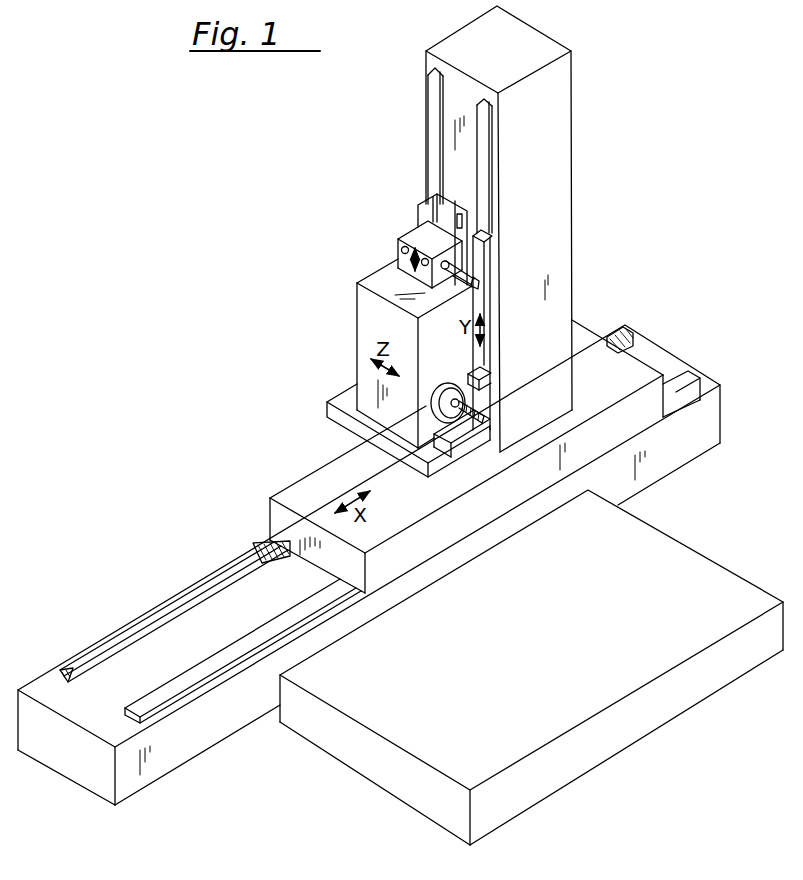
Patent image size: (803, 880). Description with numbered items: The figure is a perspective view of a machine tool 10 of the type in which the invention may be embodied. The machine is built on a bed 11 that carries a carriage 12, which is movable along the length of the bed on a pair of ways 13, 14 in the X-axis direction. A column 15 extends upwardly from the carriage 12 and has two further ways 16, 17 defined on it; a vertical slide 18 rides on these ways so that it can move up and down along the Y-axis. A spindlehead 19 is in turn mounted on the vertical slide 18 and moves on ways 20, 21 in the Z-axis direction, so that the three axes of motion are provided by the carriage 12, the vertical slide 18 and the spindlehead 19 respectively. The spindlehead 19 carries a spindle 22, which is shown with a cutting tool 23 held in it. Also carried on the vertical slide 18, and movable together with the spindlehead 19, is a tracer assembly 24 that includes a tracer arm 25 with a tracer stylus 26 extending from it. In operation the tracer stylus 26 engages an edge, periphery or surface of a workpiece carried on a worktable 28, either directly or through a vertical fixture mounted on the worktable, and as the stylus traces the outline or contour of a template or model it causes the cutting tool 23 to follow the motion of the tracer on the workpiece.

The machine tool 10 is at (345, 190).
The bed 11 is at (707, 420).
The carriage 12 is at (628, 372).
The way 13 is at (182, 611).
The way 14 is at (208, 665).
The column 15 is at (560, 235).
The way 16 is at (429, 131).
The way 17 is at (483, 147).
The vertical slide 18 is at (483, 259).
The spindlehead 19 is at (363, 306).
The way 20 is at (478, 373).
The way 21 is at (457, 430).
The spindle 22 is at (421, 412).
The cutting tool 23 is at (478, 410).
The tracer assembly 24 is at (404, 223).
The tracer arm 25 is at (449, 266).
The tracer stylus 26 is at (478, 288).
The worktable 28 is at (677, 566).